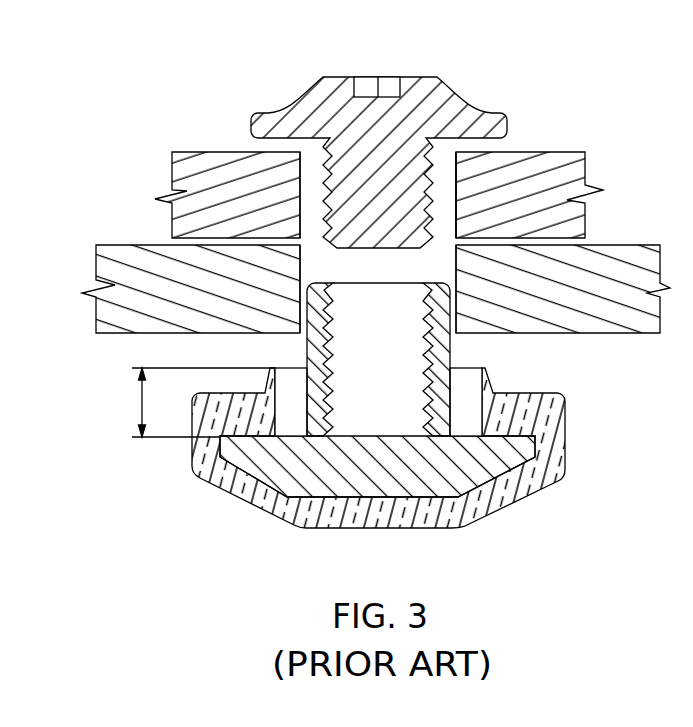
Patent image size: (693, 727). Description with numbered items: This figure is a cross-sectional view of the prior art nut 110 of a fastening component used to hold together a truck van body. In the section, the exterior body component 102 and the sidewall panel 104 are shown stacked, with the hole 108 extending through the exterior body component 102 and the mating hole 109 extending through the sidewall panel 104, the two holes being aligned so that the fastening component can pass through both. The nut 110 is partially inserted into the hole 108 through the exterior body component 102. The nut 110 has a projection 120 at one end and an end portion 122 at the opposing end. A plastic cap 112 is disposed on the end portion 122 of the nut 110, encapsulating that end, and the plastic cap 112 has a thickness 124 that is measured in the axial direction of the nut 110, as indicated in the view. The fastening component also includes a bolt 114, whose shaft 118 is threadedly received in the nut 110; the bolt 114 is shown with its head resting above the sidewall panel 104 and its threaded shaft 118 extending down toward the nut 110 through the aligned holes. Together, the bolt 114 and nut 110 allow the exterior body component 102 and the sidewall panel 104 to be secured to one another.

The exterior body component 102 is at (641, 244).
The sidewall panel 104 is at (178, 174).
The hole 108 is at (457, 310).
The mating hole 109 is at (297, 181).
The nut 110 is at (415, 425).
The plastic cap 112 is at (564, 455).
The bolt 114 is at (504, 68).
The shaft 118 is at (433, 169).
The projection 120 is at (301, 337).
The end portion 122 is at (501, 437).
The thickness 124 is at (138, 398).